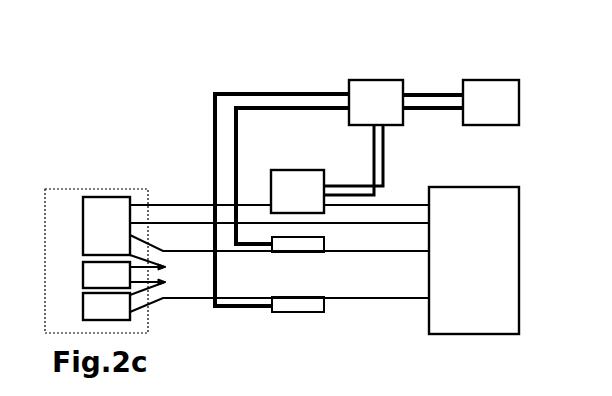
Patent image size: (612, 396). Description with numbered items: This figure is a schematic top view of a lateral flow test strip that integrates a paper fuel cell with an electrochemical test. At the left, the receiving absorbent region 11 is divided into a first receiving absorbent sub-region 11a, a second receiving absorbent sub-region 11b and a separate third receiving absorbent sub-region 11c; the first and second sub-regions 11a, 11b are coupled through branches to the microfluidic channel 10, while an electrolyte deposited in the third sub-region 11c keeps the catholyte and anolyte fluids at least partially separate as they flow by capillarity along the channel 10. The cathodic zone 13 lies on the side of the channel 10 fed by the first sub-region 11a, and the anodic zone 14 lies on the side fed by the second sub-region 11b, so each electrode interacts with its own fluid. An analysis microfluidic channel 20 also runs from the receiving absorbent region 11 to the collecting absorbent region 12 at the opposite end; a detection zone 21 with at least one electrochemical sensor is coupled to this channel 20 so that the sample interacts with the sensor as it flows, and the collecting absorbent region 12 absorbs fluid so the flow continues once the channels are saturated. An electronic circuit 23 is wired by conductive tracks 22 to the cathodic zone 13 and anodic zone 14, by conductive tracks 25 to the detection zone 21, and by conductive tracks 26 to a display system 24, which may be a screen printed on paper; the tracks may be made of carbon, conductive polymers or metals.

The microfluidic channel 10 is at (395, 275).
The receiving absorbent region 11 is at (96, 261).
The first receiving absorbent sub-region 11a is at (106, 226).
The second receiving absorbent sub-region 11b is at (106, 307).
The third receiving absorbent sub-region 11c is at (106, 275).
The collecting absorbent region 12 is at (474, 260).
The cathodic zone 13 is at (327, 245).
The anodic zone 14 is at (298, 313).
The analysis microfluidic channel 20 is at (170, 212).
The detection zone 21 is at (297, 191).
The conductive tracks 22 is at (295, 85).
The electronic circuit 23 is at (376, 102).
The display system 24 is at (491, 102).
The conductive tracks 25 is at (395, 163).
The conductive tracks 26 is at (433, 85).